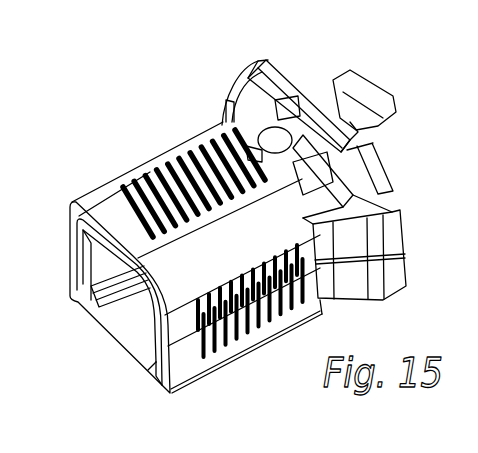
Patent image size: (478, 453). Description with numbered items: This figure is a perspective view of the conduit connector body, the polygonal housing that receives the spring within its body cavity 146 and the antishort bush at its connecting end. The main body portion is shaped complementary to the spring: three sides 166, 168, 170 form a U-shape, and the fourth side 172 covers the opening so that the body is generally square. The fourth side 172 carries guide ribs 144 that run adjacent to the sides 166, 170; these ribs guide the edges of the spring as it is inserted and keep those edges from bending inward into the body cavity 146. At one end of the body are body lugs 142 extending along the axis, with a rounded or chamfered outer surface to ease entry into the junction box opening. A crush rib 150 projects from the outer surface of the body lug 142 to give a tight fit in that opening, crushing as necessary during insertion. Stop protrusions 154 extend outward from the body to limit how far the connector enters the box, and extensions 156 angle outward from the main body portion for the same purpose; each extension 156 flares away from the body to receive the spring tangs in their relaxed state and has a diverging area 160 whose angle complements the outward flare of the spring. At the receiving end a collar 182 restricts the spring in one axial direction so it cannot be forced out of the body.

The body lug 142 is at (367, 83).
The guide rib 144 is at (117, 297).
The body cavity 146 is at (141, 306).
The crush rib 150 is at (328, 80).
The stop protrusion 154 is at (362, 118).
The extension 156 is at (398, 273).
The diverging area 160 is at (348, 277).
The side 166 is at (183, 368).
The side 168 is at (123, 222).
The side 170 is at (155, 152).
The fourth side 172 is at (157, 377).
The collar 182 is at (85, 272).